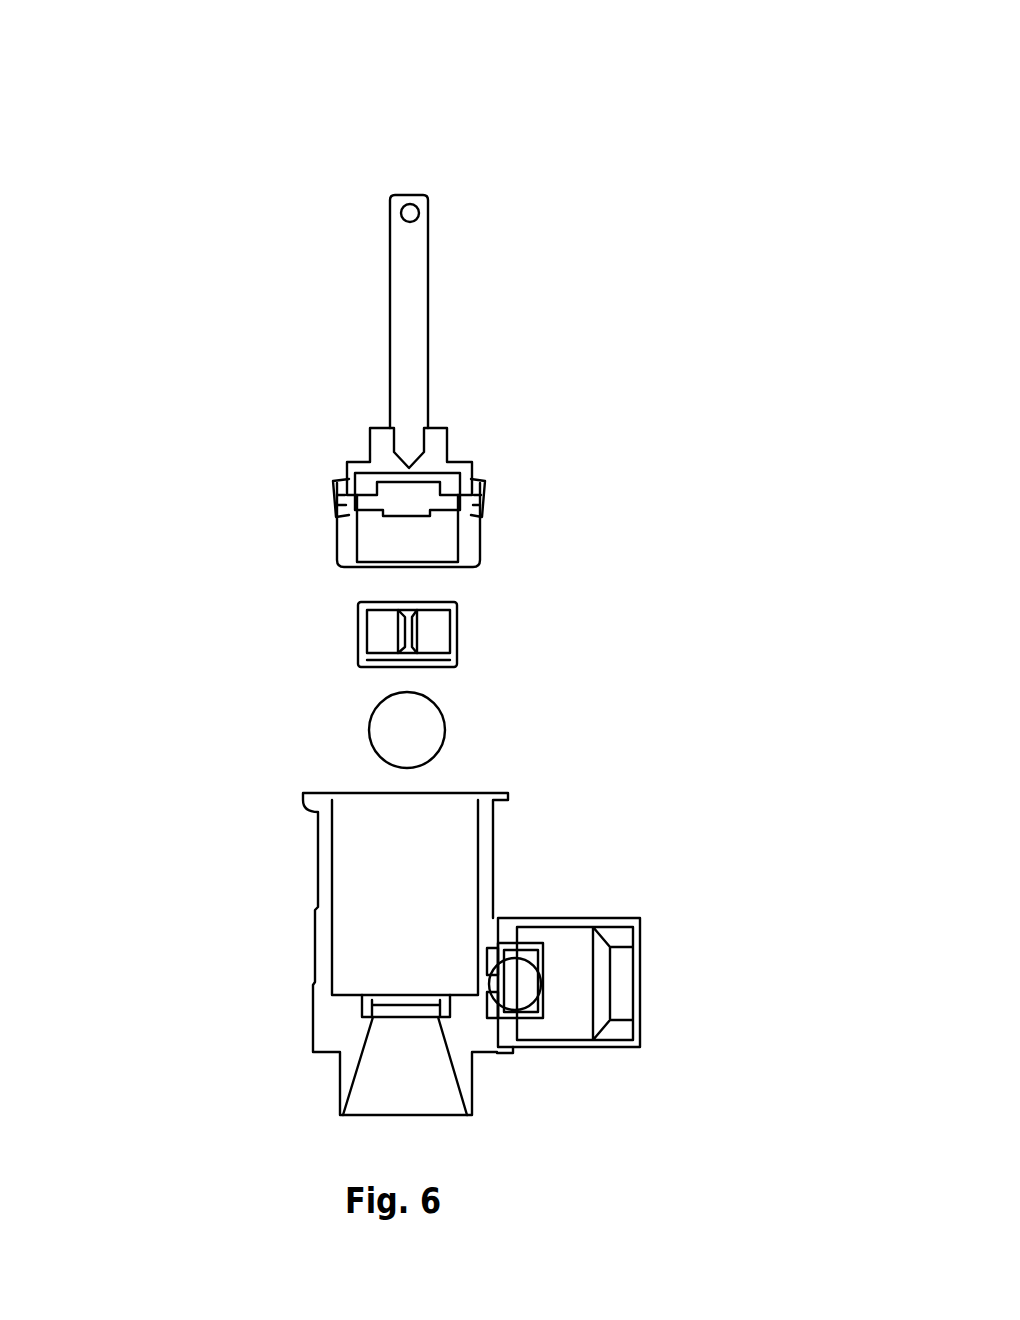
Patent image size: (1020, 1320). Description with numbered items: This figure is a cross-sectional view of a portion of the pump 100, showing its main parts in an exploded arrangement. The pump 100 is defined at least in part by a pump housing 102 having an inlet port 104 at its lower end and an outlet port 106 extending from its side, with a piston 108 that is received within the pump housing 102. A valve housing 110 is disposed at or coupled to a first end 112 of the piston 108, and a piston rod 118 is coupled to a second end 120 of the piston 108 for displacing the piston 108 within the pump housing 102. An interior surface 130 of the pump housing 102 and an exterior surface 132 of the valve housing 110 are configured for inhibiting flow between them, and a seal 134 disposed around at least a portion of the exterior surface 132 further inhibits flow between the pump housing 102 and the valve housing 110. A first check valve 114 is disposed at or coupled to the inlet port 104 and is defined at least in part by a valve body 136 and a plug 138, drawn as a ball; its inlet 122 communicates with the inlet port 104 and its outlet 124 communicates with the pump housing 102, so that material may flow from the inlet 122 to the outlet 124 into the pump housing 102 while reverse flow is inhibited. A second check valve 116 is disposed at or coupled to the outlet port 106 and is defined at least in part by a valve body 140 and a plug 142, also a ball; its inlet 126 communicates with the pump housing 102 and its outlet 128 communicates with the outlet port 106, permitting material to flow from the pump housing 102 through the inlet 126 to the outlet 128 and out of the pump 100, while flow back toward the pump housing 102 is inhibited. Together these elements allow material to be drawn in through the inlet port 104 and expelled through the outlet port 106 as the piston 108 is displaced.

The pump 100 is at (200, 88).
The pump housing 102 is at (485, 835).
The inlet port 104 is at (437, 1077).
The outlet port 106 is at (622, 987).
The piston 108 is at (437, 462).
The valve housing 110 is at (472, 540).
The first end 112 is at (372, 517).
The first check valve 114 is at (511, 593).
The second check valve 116 is at (557, 972).
The piston rod 118 is at (402, 340).
The second end 120 is at (380, 440).
The inlet 122 is at (418, 667).
The outlet 124 is at (382, 632).
The inlet 126 is at (505, 1007).
The outlet 128 is at (537, 950).
The interior surface 130 is at (330, 845).
The exterior surface 132 is at (335, 522).
The seal 134 is at (477, 495).
The valve body 136 is at (455, 628).
The plug 138 is at (407, 738).
The valve body 140 is at (518, 1007).
The plug 142 is at (517, 977).